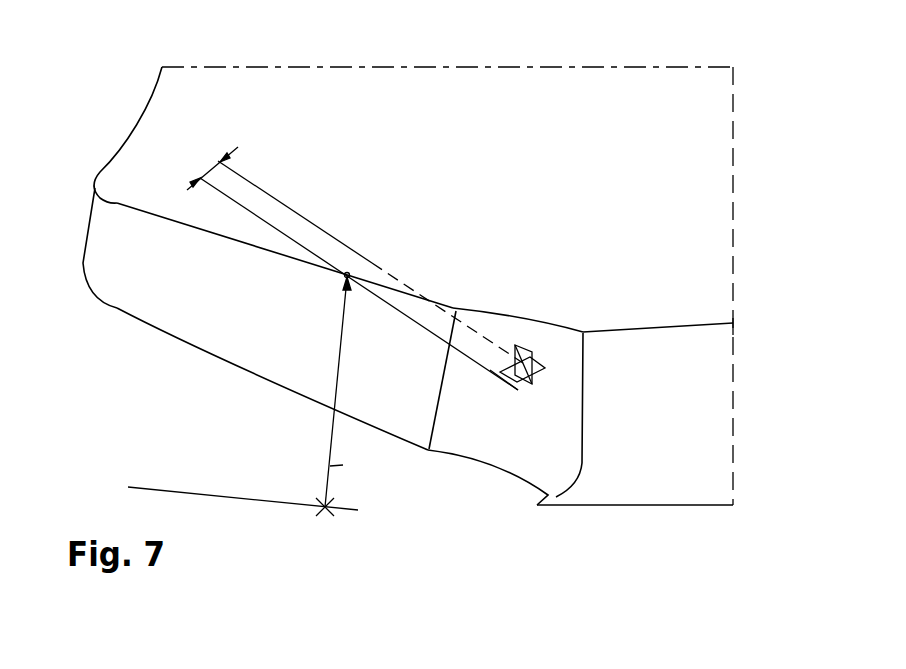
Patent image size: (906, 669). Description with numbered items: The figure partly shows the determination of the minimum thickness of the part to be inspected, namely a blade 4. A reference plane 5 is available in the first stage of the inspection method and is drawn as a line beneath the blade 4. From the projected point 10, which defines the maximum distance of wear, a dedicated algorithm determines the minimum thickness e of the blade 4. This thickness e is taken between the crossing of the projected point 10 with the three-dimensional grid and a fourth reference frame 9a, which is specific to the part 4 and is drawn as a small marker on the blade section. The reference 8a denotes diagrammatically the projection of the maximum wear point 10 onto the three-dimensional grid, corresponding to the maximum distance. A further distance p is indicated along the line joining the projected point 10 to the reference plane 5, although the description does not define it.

The blade 4 is at (735, 203).
The reference plane 5 is at (252, 500).
The projection of the maximum wear point 8a is at (495, 373).
The fourth reference frame 9a is at (526, 348).
The projected point 10 is at (348, 273).
The minimum thickness e is at (208, 171).
The distance p is at (343, 465).